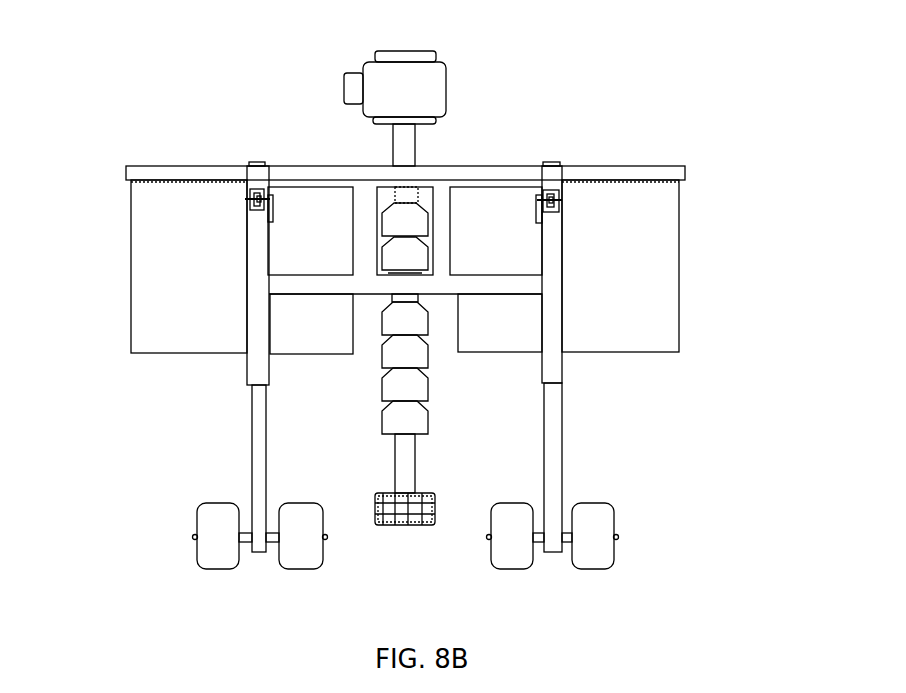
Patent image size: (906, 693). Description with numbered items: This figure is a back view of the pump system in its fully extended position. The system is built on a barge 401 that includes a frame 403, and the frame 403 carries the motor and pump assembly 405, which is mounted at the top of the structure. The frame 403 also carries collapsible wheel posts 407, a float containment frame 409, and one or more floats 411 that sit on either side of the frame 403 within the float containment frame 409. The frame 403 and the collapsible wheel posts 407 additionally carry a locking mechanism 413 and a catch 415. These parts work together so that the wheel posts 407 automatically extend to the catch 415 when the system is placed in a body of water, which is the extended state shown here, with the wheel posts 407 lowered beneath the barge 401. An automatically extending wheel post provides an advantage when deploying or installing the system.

The barge 401 is at (466, 165).
The frame 403 is at (530, 165).
The motor and pump assembly 405 is at (363, 66).
The collapsible wheel posts 407 is at (250, 435).
The float containment frame 409 is at (167, 165).
The floats 411 is at (680, 240).
The locking mechanism 413 is at (250, 199).
The catch 415 is at (253, 190).